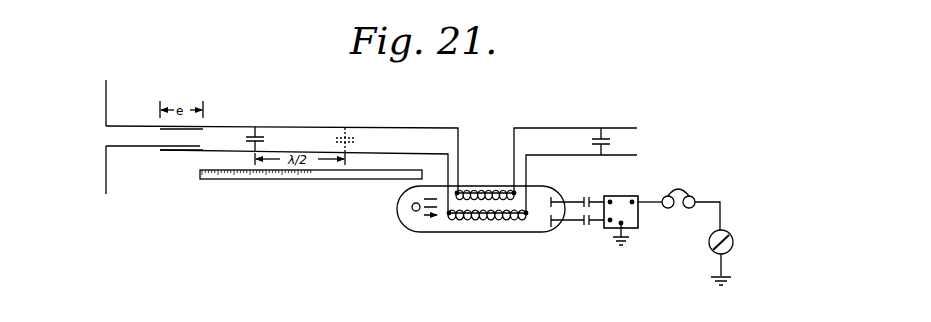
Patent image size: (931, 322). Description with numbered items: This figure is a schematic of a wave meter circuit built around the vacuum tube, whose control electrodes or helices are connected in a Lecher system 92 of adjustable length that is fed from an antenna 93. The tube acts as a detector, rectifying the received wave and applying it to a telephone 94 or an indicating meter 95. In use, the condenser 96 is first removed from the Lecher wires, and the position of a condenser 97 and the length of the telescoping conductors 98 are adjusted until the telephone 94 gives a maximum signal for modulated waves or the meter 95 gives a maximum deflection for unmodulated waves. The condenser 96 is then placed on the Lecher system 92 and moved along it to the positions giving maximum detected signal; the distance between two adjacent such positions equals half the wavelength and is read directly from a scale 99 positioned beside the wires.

The Lecher system 92 is at (219, 121).
The antenna 93 is at (96, 123).
The telephone 94 is at (675, 190).
The indicating meter 95 is at (731, 238).
The condenser 96 is at (264, 138).
The condenser 97 is at (612, 146).
The telescoping conductors 98 is at (180, 128).
The scale 99 is at (244, 180).